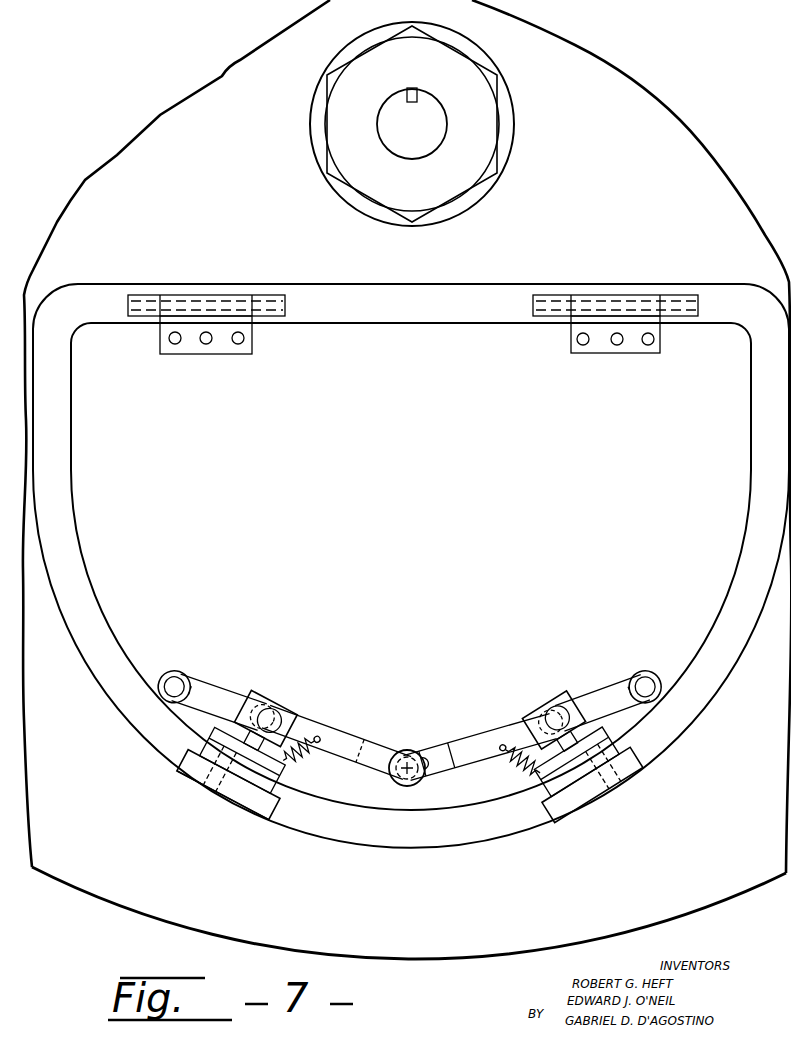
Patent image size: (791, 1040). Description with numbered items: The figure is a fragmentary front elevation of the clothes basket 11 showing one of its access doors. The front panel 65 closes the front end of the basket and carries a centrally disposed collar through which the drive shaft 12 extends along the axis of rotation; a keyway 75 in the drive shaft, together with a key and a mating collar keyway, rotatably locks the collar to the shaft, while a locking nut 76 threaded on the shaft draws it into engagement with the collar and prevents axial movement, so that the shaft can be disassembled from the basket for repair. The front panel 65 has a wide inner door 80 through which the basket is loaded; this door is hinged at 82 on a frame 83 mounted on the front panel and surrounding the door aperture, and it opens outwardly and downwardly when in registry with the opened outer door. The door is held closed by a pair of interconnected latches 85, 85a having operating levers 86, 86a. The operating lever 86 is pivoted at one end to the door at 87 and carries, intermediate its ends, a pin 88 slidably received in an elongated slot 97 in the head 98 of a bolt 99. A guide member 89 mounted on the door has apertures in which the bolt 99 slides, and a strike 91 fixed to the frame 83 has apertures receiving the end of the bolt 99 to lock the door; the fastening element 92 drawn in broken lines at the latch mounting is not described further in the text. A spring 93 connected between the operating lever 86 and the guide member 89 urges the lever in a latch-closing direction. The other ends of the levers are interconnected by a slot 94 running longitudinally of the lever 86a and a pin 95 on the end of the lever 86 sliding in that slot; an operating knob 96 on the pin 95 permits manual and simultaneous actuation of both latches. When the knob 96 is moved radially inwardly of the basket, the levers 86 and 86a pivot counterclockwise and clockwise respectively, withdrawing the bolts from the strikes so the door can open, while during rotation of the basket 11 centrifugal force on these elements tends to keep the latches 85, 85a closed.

The basket 11 is at (121, 142).
The drive shaft 12 is at (440, 123).
The keyway 75 is at (418, 97).
The locking nut 76 is at (492, 146).
The inner door 80 is at (132, 647).
The hinge 82 is at (207, 300).
The frame 83 is at (315, 292).
The latch 85 is at (203, 776).
The latch 85a is at (572, 802).
The operating lever 86 is at (345, 736).
The operating lever 86a is at (479, 733).
The pivot 87 is at (173, 668).
The pin 88 is at (272, 708).
The guide member 89 is at (200, 748).
The strike 91 is at (248, 805).
The bolt 92 is at (212, 794).
The spring 93 is at (302, 764).
The slot 94 is at (440, 752).
The pin 95 is at (404, 756).
The operating knob 96 is at (415, 752).
The elongated slot 97 is at (250, 710).
The head 98 is at (268, 698).
The bolt 99 is at (242, 722).
The front panel 65 is at (83, 880).